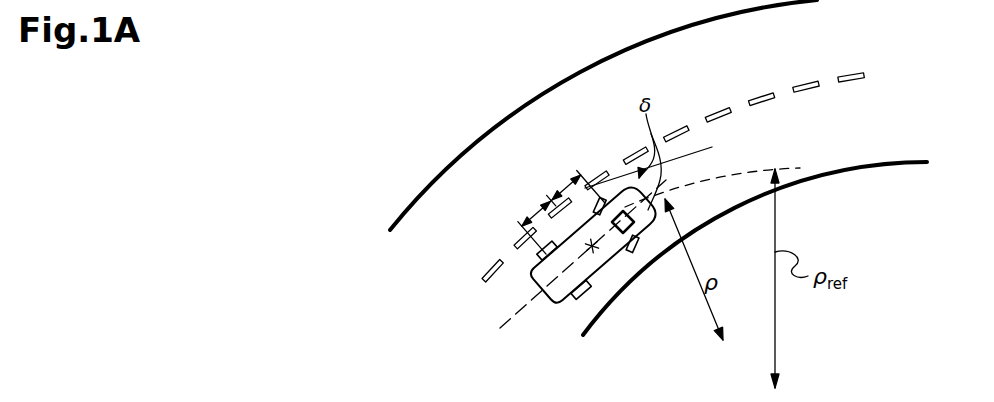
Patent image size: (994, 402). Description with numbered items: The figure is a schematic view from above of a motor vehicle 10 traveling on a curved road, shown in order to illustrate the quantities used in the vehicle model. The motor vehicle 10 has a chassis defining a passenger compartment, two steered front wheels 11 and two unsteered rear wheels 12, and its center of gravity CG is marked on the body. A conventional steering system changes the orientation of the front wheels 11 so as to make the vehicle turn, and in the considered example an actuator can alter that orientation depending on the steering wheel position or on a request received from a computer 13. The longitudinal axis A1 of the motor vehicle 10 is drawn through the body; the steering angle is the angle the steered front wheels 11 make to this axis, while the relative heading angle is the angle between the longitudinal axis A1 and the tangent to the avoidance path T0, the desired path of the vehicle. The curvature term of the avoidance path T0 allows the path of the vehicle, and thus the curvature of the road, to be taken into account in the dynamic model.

The motor vehicle 10 is at (531, 275).
The steered front wheels 11 is at (651, 208).
The unsteered rear wheels 12 is at (593, 297).
The computer 13 is at (622, 210).
The longitudinal axis A1 is at (530, 303).
The avoidance path T0 is at (737, 173).